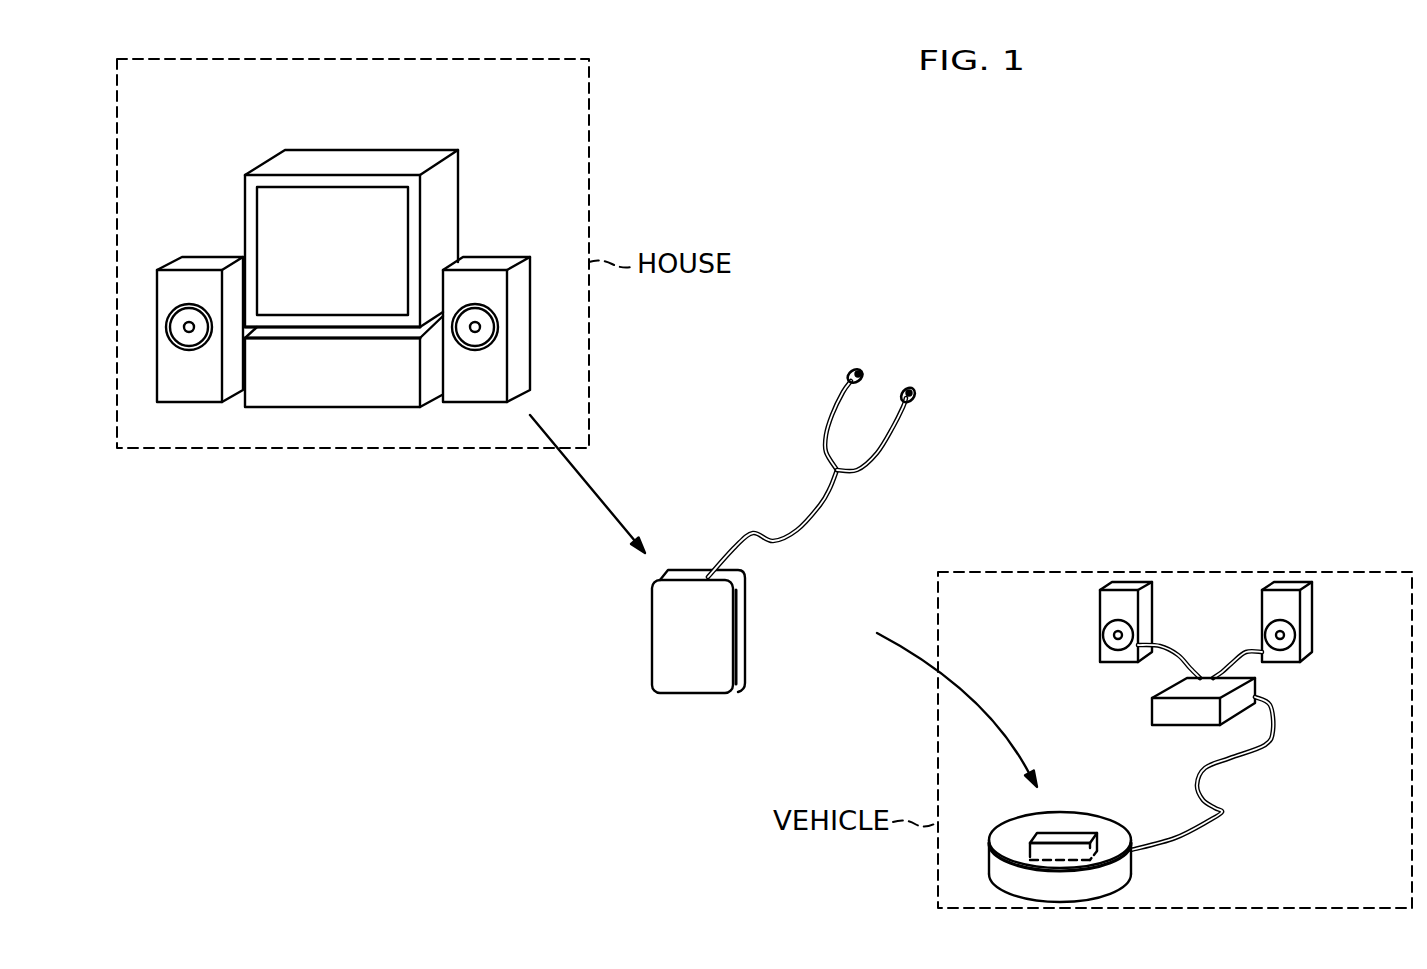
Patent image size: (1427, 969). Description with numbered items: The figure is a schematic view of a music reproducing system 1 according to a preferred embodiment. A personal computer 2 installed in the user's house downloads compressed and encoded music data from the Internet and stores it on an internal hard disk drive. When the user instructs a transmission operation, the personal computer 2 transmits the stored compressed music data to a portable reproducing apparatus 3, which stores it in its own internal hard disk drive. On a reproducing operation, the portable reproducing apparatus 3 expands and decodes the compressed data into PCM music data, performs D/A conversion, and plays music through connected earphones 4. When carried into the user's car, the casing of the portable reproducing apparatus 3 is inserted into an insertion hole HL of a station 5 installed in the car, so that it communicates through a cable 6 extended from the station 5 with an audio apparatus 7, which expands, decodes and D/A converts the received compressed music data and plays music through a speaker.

The music reproducing system 1 is at (473, 692).
The personal computer 2 is at (307, 163).
The portable reproducing apparatus 3 is at (692, 697).
The earphones 4 is at (866, 475).
The station 5 is at (1133, 872).
The cable 6 is at (1226, 812).
The audio apparatus 7 is at (1260, 690).
The insertion hole HL is at (1072, 820).